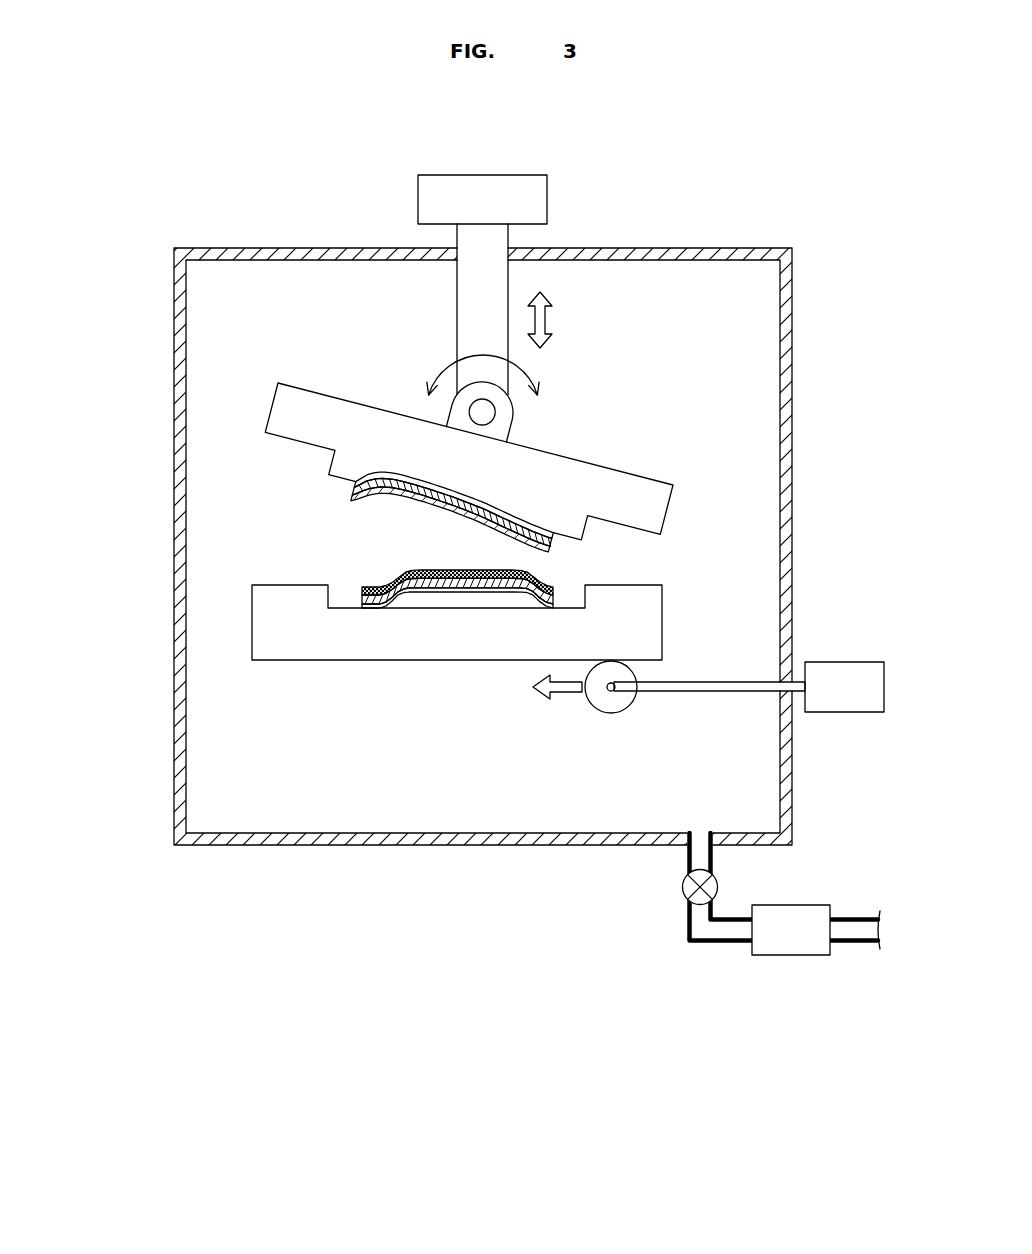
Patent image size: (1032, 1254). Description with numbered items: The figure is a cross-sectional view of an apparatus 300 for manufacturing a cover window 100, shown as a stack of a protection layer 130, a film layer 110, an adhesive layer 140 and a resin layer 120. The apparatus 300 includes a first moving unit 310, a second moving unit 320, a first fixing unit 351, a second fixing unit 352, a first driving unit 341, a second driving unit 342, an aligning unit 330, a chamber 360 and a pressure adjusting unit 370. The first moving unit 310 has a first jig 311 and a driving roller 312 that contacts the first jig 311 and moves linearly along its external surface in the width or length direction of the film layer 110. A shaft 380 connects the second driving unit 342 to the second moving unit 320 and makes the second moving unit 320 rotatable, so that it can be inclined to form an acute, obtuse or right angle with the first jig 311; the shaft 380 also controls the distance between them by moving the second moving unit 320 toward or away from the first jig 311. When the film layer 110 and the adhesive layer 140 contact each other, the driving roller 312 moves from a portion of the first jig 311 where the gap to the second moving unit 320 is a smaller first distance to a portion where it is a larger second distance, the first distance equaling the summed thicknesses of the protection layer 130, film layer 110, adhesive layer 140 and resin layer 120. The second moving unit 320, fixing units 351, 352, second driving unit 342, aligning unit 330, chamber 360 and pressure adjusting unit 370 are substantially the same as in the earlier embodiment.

The apparatus for manufacturing a cover window 300 is at (232, 163).
The cover window 100 is at (115, 520).
The film layer 110 is at (355, 502).
The resin layer 120 is at (362, 598).
The protection layer 130 is at (352, 492).
The adhesive layer 140 is at (362, 590).
The first moving unit 310 is at (554, 665).
The first jig 311 is at (458, 636).
The driving roller 312 is at (606, 706).
The second moving unit 320 is at (652, 507).
The aligning unit 330 is at (554, 644).
The first driving unit 341 is at (846, 713).
The second driving unit 342 is at (418, 201).
The first fixing unit 351 is at (377, 608).
The second fixing unit 352 is at (388, 477).
The chamber 360 is at (793, 343).
The pressure adjusting unit 370 is at (708, 968).
The shaft 380 is at (465, 313).